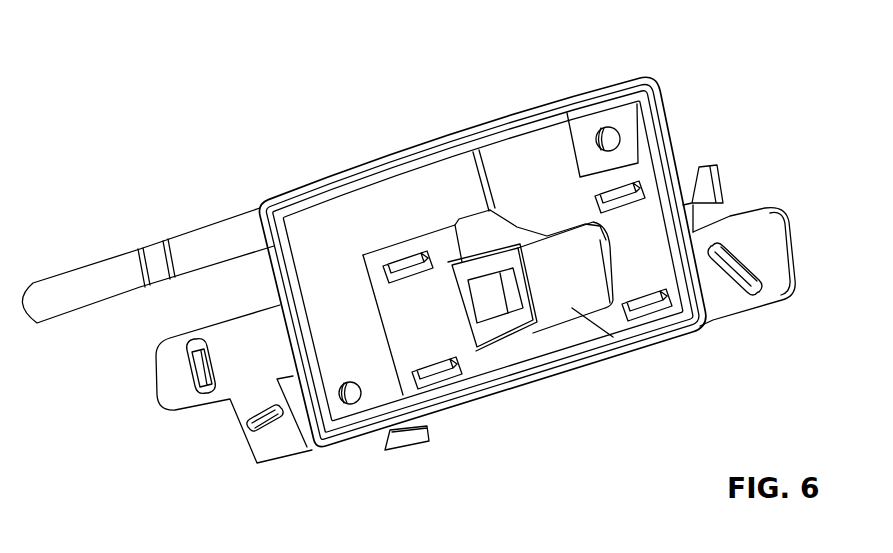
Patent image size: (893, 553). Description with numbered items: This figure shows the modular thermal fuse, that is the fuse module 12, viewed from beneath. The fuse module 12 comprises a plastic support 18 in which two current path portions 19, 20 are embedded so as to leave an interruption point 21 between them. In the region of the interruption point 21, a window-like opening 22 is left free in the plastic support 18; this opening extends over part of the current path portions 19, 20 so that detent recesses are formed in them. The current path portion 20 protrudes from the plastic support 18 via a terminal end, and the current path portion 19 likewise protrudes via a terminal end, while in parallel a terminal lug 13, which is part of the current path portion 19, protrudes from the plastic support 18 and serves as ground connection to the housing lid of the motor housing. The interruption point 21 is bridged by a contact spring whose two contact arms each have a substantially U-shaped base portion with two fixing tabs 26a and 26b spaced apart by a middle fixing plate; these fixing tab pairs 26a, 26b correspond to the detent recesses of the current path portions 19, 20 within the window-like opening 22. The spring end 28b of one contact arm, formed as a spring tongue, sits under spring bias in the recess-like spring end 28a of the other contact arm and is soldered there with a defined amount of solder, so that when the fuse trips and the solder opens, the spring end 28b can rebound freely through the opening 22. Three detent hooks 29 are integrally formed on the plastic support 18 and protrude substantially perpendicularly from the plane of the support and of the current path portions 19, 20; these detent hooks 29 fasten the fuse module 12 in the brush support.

The fuse module 12 is at (654, 80).
The terminal lug 13 is at (63, 278).
The plastic support 18 is at (288, 187).
The current path portion 19 is at (148, 383).
The current path portion 20 is at (765, 197).
The interruption point 21 is at (503, 240).
The window-like opening 22 is at (477, 287).
The fixing tab 26a is at (430, 372).
The fixing tab 26b is at (640, 300).
The recess-like spring end 28a is at (480, 273).
The spring end 28b is at (547, 285).
The detent hook 29 is at (698, 178).